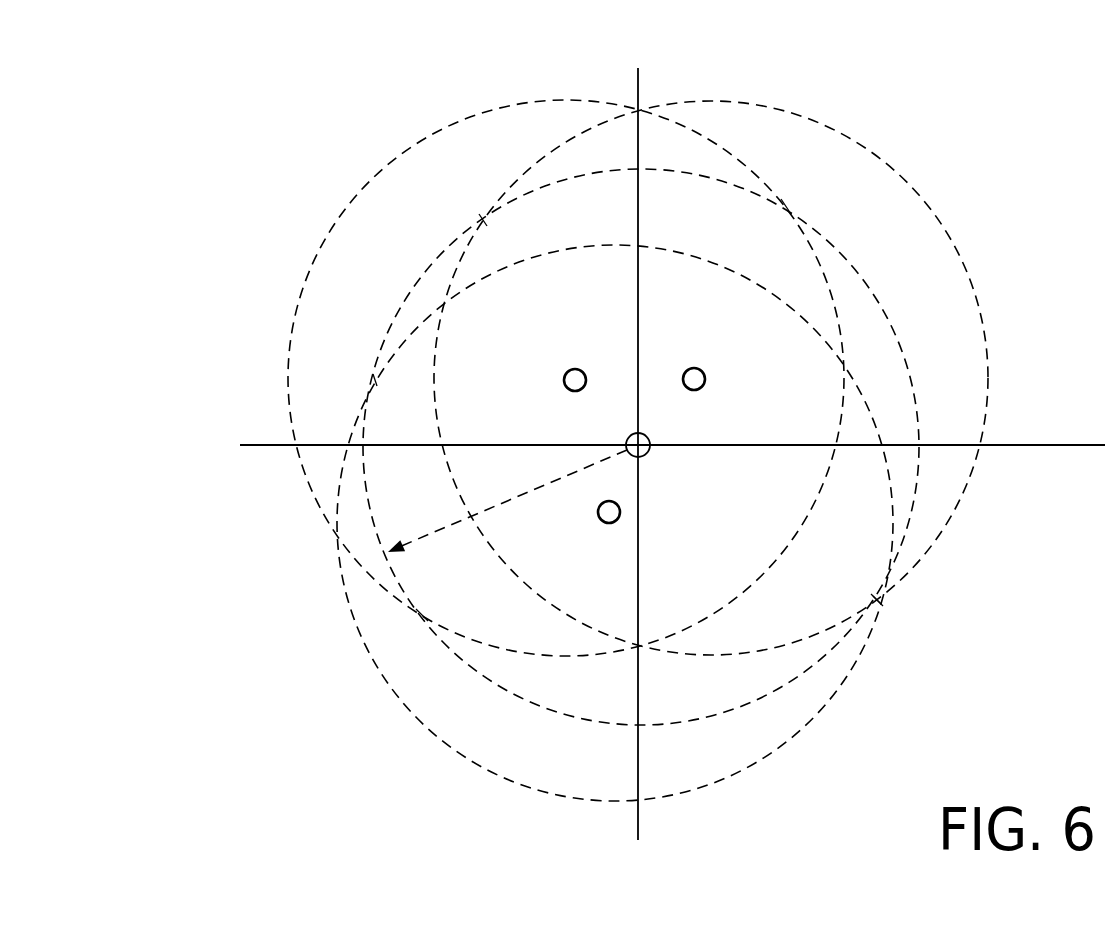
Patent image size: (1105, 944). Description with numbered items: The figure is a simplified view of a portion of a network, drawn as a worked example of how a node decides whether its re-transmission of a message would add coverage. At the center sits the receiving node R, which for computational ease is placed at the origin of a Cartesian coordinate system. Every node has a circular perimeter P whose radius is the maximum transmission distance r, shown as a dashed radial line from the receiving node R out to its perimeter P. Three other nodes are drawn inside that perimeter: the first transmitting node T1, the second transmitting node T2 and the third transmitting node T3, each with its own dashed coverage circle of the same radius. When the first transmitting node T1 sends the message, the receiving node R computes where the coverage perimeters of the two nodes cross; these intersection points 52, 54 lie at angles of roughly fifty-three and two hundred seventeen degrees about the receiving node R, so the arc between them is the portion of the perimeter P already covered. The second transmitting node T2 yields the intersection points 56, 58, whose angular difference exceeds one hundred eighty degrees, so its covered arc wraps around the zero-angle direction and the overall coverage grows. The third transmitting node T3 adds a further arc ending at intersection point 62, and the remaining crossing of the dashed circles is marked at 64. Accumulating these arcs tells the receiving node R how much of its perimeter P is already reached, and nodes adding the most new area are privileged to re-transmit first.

The intersection point 52 is at (785, 205).
The intersection point 54 is at (422, 615).
The intersection point 56 is at (483, 220).
The intersection point 58 is at (876, 602).
The intersection point 62 is at (375, 380).
The intersection point 64 is at (877, 600).
The receiving node R is at (648, 454).
The maximum transmission distance r is at (448, 526).
The perimeter P is at (708, 721).
The first transmitting node T1 is at (564, 374).
The second transmitting node T2 is at (701, 369).
The third transmitting node T3 is at (600, 522).